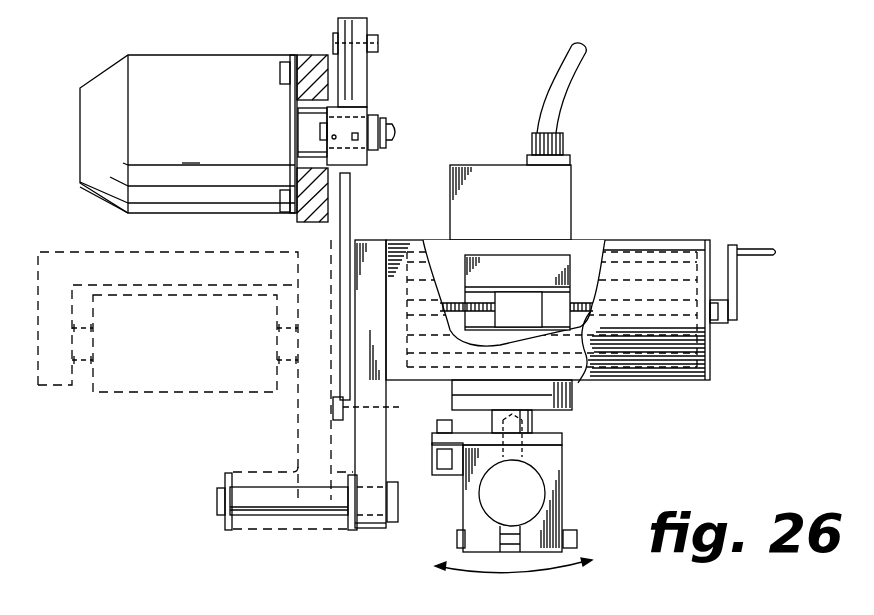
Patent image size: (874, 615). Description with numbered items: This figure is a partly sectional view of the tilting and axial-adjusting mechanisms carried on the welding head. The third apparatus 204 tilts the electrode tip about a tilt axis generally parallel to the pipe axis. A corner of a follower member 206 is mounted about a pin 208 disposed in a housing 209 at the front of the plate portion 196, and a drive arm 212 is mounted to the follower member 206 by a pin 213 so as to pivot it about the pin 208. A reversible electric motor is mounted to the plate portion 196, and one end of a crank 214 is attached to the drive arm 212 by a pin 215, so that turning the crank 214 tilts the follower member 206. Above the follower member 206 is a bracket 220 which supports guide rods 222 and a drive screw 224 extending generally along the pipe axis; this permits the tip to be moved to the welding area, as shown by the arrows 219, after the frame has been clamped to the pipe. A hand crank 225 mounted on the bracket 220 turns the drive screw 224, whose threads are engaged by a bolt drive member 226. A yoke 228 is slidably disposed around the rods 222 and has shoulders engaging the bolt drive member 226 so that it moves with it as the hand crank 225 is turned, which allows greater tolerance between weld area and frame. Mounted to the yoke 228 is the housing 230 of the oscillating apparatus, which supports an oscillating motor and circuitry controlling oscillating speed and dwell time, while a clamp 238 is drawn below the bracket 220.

The plate portion 196 is at (298, 420).
The third apparatus 204 is at (210, 62).
The follower member 206 is at (370, 240).
The pin 208 is at (215, 500).
The housing 209 is at (253, 530).
The drive arm 212 is at (352, 200).
The pin 213 is at (402, 397).
The crank 214 is at (368, 75).
The pin 215 is at (380, 44).
The arrows 219 is at (440, 217).
The bracket 220 is at (655, 240).
The guide rods 222 is at (453, 265).
The drive screw 224 is at (580, 384).
The hand crank 225 is at (740, 268).
The bolt drive member 226 is at (537, 322).
The yoke 228 is at (533, 285).
The housing 230 is at (572, 168).
The clamp 238 is at (563, 455).